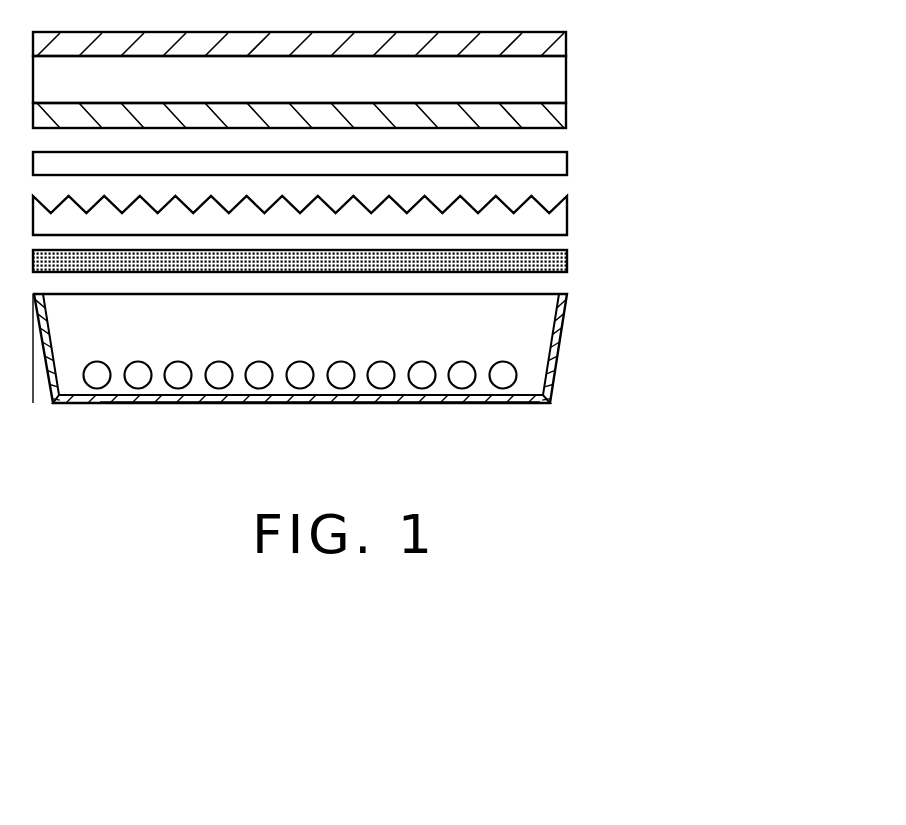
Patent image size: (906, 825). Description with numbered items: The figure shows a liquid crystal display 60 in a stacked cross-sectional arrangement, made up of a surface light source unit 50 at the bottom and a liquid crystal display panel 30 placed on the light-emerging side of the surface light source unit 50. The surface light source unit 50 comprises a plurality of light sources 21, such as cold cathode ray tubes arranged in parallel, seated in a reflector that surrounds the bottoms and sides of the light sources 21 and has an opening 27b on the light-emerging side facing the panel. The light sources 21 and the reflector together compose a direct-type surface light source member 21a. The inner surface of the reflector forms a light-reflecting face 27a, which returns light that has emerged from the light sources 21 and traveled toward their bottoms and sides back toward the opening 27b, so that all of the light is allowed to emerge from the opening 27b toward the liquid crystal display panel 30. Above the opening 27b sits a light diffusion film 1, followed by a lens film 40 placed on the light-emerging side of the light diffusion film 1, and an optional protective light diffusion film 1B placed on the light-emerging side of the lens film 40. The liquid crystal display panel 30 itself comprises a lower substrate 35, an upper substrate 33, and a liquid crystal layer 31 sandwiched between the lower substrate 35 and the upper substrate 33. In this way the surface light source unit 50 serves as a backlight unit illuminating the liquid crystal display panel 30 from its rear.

The light diffusion film 1 is at (560, 264).
The protective light diffusion film 1B is at (562, 164).
The light sources 21 is at (510, 370).
The direct-type surface light source member 21a is at (371, 432).
The light-reflecting face 27a is at (555, 385).
The opening 27b is at (533, 309).
The liquid crystal display panel 30 is at (395, 79).
The liquid crystal layer 31 is at (560, 80).
The upper substrate 33 is at (560, 45).
The lower substrate 35 is at (350, 115).
The lens film 40 is at (558, 220).
The surface light source unit 50 is at (395, 302).
The liquid crystal display 60 is at (755, 25).